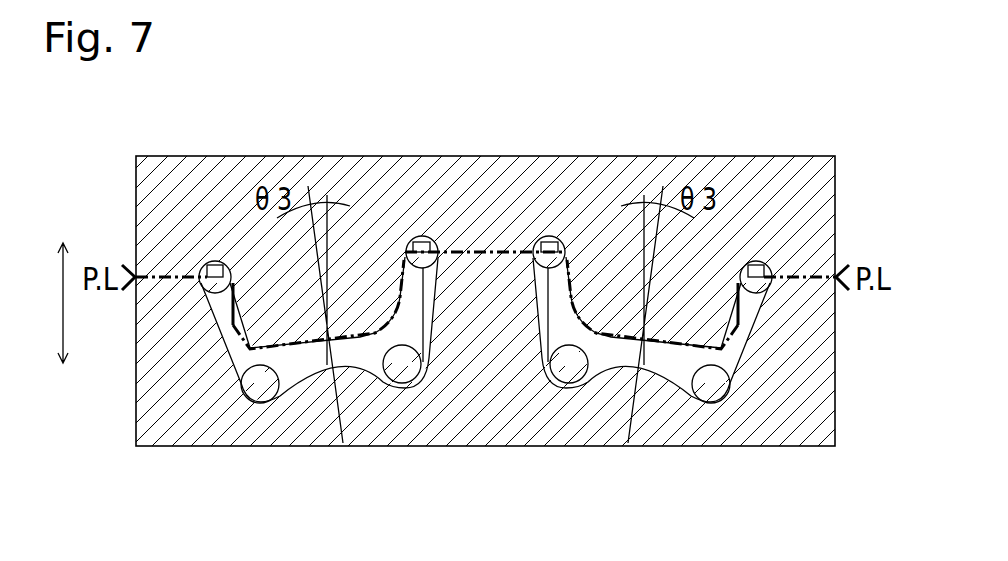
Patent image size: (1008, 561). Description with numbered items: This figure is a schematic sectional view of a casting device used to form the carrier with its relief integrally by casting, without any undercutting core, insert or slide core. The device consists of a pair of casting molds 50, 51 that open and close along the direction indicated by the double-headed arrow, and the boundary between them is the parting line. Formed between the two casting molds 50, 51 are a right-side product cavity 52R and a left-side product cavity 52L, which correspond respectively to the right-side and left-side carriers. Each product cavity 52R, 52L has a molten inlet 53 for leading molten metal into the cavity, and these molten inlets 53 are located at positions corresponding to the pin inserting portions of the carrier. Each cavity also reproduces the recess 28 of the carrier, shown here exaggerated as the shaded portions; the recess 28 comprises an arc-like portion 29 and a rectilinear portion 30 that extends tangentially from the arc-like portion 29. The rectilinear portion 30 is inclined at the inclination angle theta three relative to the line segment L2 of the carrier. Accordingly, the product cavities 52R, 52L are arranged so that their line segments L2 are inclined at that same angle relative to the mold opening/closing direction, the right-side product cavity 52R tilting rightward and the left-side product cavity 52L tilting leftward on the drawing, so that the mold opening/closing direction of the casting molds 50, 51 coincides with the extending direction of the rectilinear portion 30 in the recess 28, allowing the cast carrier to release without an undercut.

The casting mold 50 is at (808, 172).
The casting mold 51 is at (790, 430).
The left-side product cavity 52L is at (310, 372).
The right-side product cavity 52R is at (661, 372).
The molten inlet 53 is at (213, 261).
The arc-like portion 29 is at (222, 300).
The rectilinear portion 30 is at (225, 297).
The recess 28 is at (240, 344).
The line segment L2 is at (485, 299).